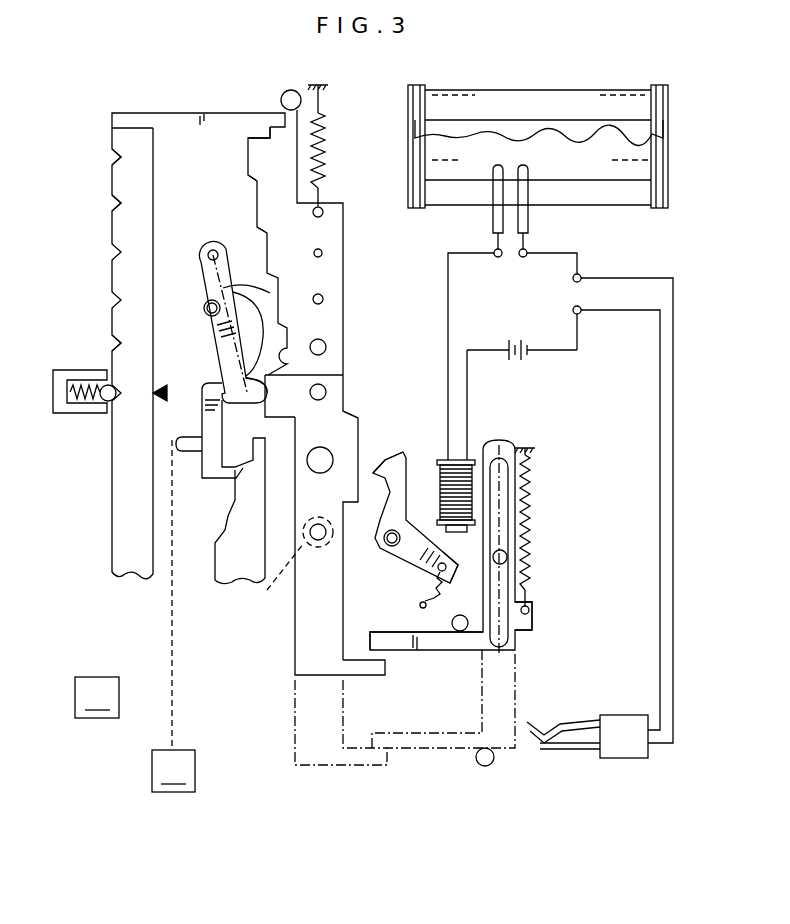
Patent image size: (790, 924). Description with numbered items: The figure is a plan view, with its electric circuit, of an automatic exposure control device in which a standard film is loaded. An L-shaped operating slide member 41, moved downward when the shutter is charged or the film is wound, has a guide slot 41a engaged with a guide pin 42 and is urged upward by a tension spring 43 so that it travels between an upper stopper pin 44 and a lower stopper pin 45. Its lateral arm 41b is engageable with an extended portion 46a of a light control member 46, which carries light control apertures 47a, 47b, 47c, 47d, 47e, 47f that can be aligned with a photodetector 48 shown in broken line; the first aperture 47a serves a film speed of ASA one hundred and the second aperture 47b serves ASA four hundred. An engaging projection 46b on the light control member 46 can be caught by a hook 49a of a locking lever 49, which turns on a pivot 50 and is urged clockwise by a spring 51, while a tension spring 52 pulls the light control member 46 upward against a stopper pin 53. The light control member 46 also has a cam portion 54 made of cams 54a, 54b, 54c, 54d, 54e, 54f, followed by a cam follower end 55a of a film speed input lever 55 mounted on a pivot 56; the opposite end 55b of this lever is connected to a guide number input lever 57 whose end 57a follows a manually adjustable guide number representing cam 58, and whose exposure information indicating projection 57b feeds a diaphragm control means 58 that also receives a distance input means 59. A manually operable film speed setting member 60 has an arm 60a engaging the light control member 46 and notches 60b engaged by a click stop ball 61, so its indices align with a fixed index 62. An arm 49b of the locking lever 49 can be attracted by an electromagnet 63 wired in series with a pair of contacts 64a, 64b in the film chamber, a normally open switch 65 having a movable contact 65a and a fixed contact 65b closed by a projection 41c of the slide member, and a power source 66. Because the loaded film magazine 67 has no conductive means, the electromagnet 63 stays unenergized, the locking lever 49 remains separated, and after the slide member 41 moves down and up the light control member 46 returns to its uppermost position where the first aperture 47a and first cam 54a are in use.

The operating slide member 41 is at (516, 473).
The guide slot 41a is at (499, 528).
The arm 41b is at (440, 646).
The projection 41c is at (534, 619).
The guide pin 42 is at (507, 560).
The tension spring 43 is at (529, 506).
The upper stopper pin 44 is at (459, 615).
The lower stopper pin 45 is at (485, 767).
The light control member 46 is at (345, 318).
The extended portion 46a is at (379, 676).
The engaging projection 46b is at (360, 419).
The first light control aperture 47a is at (318, 544).
The second light control aperture 47b is at (320, 473).
The light control aperture 47c is at (327, 392).
The light control aperture 47d is at (325, 344).
The light control aperture 47e is at (322, 296).
The light control aperture 47f is at (322, 250).
The photodetector 48 is at (270, 579).
The locking lever 49 is at (408, 523).
The hook 49a is at (380, 468).
The arm 49b is at (452, 565).
The pivot 50 is at (390, 547).
The spring 51 is at (420, 592).
The tension spring 52 is at (326, 158).
The stopper pin 53 is at (289, 91).
The cam portion 54 is at (245, 177).
The first cam 54a is at (244, 433).
The cam 54b is at (340, 372).
The cam 54c is at (223, 288).
The cam 54d is at (268, 250).
The cam 54e is at (255, 201).
The cam 54f is at (247, 142).
The film speed input lever 55 is at (207, 347).
The cam follower end 55a is at (284, 378).
The opposite end 55b is at (207, 252).
The pivot 56 is at (204, 310).
The guide number input lever 57 is at (209, 390).
The end 57a is at (238, 476).
The exposure information indicating projection 57b is at (193, 438).
The guide number representing cam 58 is at (223, 568).
The distance input means 59 is at (119, 698).
The film speed setting member 60 is at (114, 495).
The arm 60a is at (262, 118).
The notches 60b is at (119, 157).
The click stop ball 61 is at (103, 401).
The fixed index 62 is at (159, 396).
The electromagnet 63 is at (468, 462).
The contact 64a is at (492, 218).
The contact 64b is at (529, 219).
The normally open switch 65 is at (625, 760).
The movable contact 65a is at (542, 725).
The fixed contact 65b is at (560, 749).
The power source 66 is at (513, 340).
The film magazine 67 is at (548, 93).